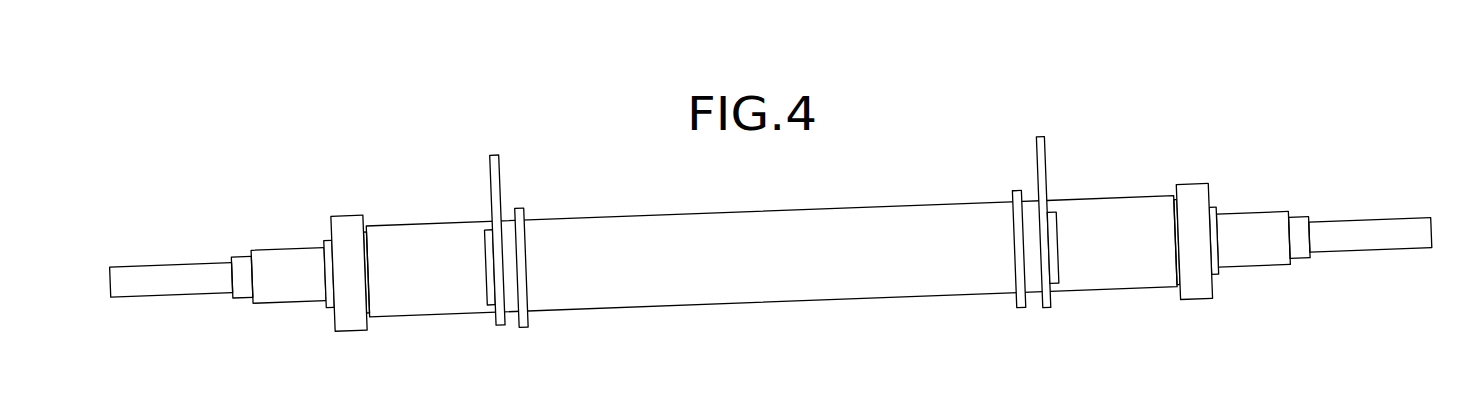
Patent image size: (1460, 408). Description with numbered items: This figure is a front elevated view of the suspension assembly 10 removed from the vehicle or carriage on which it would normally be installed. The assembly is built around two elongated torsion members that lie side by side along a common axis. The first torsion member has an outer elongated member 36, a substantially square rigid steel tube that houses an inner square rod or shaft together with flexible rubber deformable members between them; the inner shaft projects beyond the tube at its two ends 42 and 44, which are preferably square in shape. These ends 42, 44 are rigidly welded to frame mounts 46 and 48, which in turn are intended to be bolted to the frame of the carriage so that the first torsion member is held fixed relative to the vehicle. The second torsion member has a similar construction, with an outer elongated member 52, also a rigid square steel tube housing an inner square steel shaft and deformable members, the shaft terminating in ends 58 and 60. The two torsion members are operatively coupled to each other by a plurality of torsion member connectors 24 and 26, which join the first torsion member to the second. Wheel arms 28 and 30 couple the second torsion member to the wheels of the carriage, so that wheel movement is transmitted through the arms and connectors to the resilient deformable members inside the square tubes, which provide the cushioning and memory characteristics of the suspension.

The suspension assembly 10 is at (330, 115).
The torsion member connector 24 is at (526, 267).
The torsion member connector 26 is at (1015, 247).
The wheel arm 28 is at (348, 215).
The wheel arm 30 is at (1192, 185).
The outer elongated member 36 is at (867, 240).
The end 42 is at (487, 267).
The end 44 is at (1057, 250).
The frame mount 46 is at (497, 154).
The frame mount 48 is at (1040, 137).
The outer elongated member 52 is at (1095, 222).
The end 58 is at (327, 276).
The end 60 is at (1218, 242).